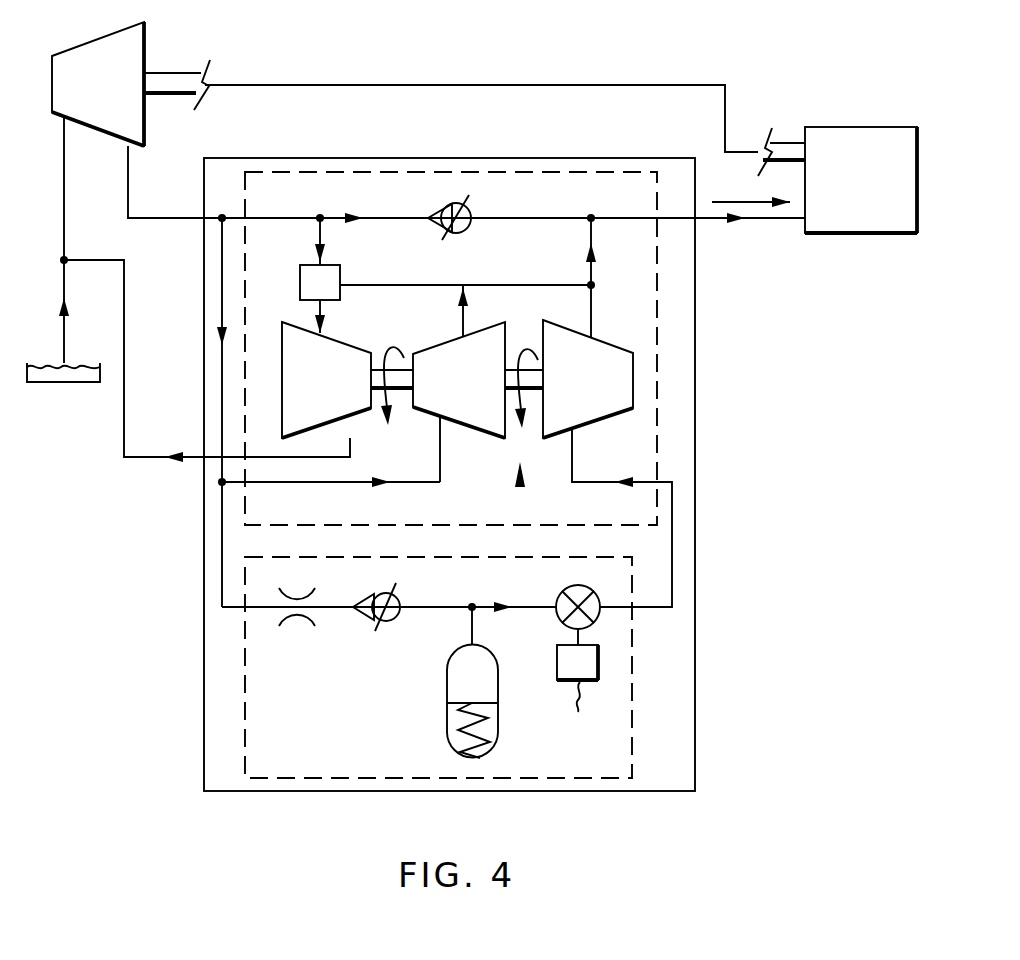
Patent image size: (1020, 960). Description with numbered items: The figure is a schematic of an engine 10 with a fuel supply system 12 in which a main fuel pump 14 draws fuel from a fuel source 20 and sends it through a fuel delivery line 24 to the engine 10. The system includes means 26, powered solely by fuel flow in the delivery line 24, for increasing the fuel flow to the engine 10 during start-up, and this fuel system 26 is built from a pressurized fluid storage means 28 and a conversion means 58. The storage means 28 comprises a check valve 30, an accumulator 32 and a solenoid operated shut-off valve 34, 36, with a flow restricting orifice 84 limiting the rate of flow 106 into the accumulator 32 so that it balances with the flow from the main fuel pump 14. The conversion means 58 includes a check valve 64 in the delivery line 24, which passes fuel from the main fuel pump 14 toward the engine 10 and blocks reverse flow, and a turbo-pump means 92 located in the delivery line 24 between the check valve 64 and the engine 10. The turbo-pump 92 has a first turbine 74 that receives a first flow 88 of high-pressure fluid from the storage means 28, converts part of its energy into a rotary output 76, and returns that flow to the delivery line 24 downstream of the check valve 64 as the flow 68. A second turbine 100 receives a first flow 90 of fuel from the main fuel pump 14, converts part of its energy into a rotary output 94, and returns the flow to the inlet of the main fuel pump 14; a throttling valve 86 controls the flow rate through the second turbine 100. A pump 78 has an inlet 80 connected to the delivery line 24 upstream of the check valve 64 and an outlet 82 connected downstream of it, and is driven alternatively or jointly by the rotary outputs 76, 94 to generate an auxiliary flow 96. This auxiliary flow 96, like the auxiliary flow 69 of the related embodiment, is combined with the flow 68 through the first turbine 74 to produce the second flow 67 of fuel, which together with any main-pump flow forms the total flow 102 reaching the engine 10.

The engine 10 is at (878, 198).
The fuel supply system 12 is at (300, 40).
The main fuel pump 14 is at (116, 98).
The fuel source 20 is at (40, 382).
The fuel delivery line 24 is at (556, 218).
The means for increasing the flow of fuel 26 is at (695, 712).
The pressurized fluid storage means 28 is at (635, 705).
The check valve 30 is at (385, 627).
The accumulator 32 is at (455, 750).
The solenoid operated shut-off valve 34 is at (568, 588).
The solenoid 36 is at (560, 681).
The conversion means 58 is at (658, 422).
The check valve 64 is at (450, 200).
The second flow of fuel 67 is at (730, 225).
The first flow of fluid through the first turbine 68 is at (597, 250).
The auxiliary flow of fluid 69 is at (380, 490).
The first turbine 74 is at (602, 396).
The rotary output of the first turbine 76 is at (520, 330).
The pump 78 is at (477, 396).
The pump inlet 80 is at (440, 450).
The pump outlet 82 is at (455, 302).
The flow restricting orifice 84 is at (293, 615).
The throttling valve 86 is at (298, 270).
The first flow of pressurized fluid 88 is at (628, 480).
The first flow of fuel from the main fuel pump 90 is at (316, 242).
The turbo-pump means 92 is at (520, 488).
The rotary output of the second turbine 94 is at (382, 350).
The auxiliary flow of fluid 96 is at (470, 318).
The second turbine 100 is at (347, 396).
The total flow of fuel 102 is at (738, 200).
The flow into the accumulator 106 is at (215, 330).